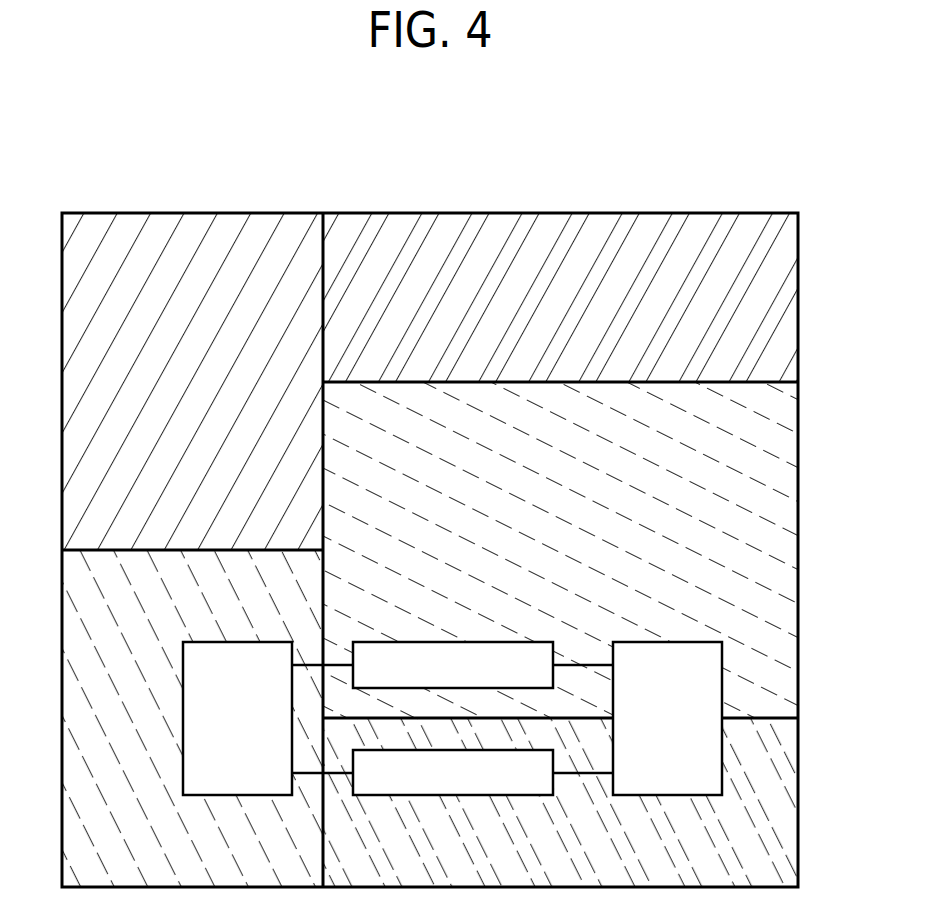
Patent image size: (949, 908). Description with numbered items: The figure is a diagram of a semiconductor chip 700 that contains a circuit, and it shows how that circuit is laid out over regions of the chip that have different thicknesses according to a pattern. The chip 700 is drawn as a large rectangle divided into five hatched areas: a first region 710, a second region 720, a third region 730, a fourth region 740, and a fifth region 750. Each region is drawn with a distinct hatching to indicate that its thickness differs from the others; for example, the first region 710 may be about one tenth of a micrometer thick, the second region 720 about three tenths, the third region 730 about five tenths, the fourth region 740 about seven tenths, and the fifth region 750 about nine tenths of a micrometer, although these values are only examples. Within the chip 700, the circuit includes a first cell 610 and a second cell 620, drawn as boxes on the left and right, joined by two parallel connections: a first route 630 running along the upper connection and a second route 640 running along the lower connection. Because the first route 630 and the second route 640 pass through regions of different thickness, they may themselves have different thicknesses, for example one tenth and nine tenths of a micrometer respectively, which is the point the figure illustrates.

The semiconductor chip 700 is at (737, 167).
The first region 710 is at (733, 422).
The second region 720 is at (308, 871).
The third region 730 is at (735, 253).
The fourth region 740 is at (257, 253).
The fifth region 750 is at (733, 872).
The first cell 610 is at (237, 641).
The second cell 620 is at (668, 641).
The first route 630 is at (453, 642).
The second route 640 is at (452, 795).